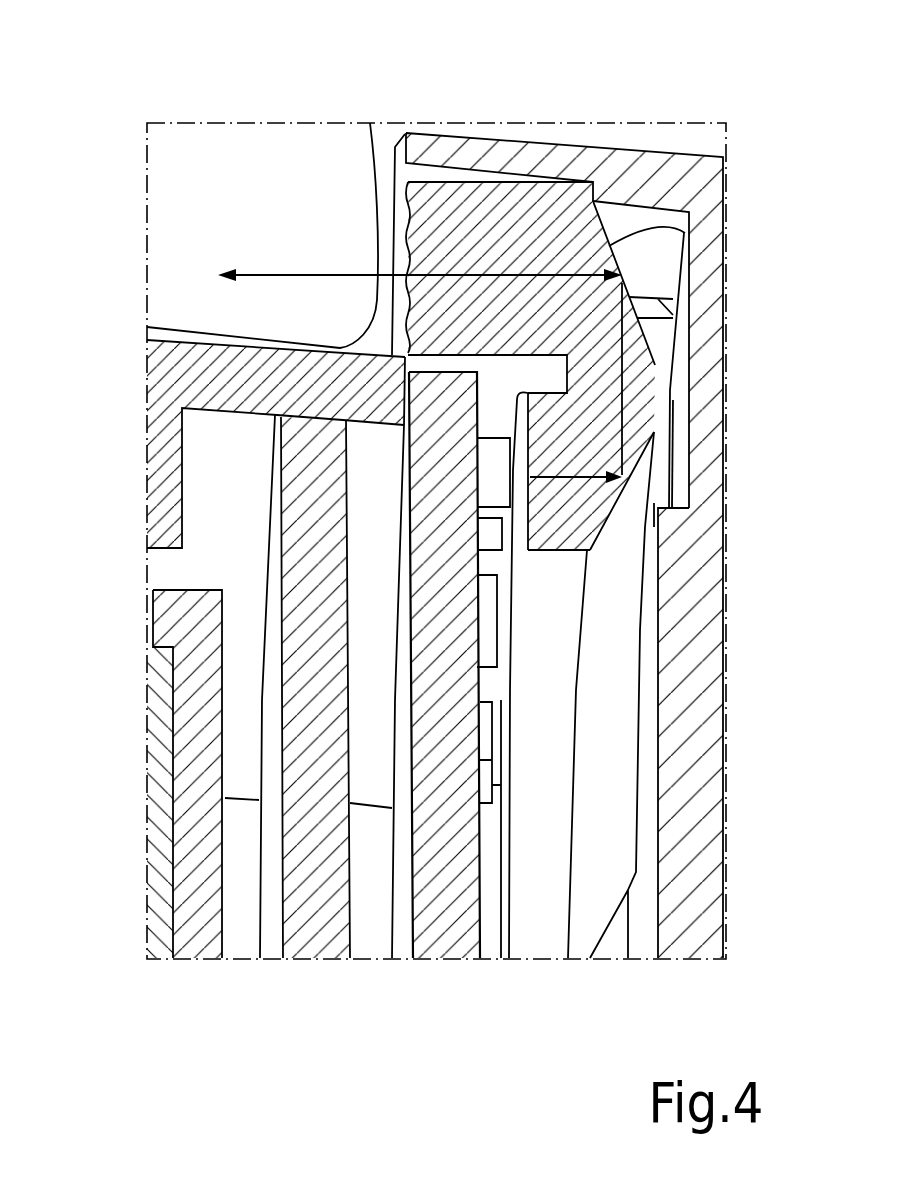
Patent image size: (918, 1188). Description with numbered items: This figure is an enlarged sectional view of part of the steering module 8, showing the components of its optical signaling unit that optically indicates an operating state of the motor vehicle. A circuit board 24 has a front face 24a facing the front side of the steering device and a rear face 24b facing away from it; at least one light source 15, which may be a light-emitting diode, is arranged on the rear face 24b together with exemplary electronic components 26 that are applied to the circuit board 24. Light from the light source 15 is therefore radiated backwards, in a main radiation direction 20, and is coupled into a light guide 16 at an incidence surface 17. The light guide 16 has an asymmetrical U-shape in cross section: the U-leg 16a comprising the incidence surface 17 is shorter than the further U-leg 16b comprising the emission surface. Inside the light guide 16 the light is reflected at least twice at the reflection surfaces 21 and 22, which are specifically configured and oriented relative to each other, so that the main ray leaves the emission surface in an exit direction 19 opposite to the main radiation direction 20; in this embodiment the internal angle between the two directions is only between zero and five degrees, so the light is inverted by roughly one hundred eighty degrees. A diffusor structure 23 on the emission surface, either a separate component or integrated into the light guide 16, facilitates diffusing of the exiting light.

The steering module 8 is at (124, 794).
The light source 15 is at (484, 450).
The light guide 16 is at (664, 350).
The U-leg 16a is at (585, 536).
The further U-leg 16b is at (512, 205).
The incidence surface 17 is at (533, 430).
The exit direction 19 is at (265, 275).
The main radiation direction 20 is at (580, 484).
The reflection surface 21 is at (621, 491).
The reflection surface 22 is at (690, 233).
The diffusor structure 23 is at (406, 255).
The circuit board 24 is at (452, 940).
The front face 24a is at (413, 934).
The rear face 24b is at (482, 932).
The electronic components 26 is at (483, 622).